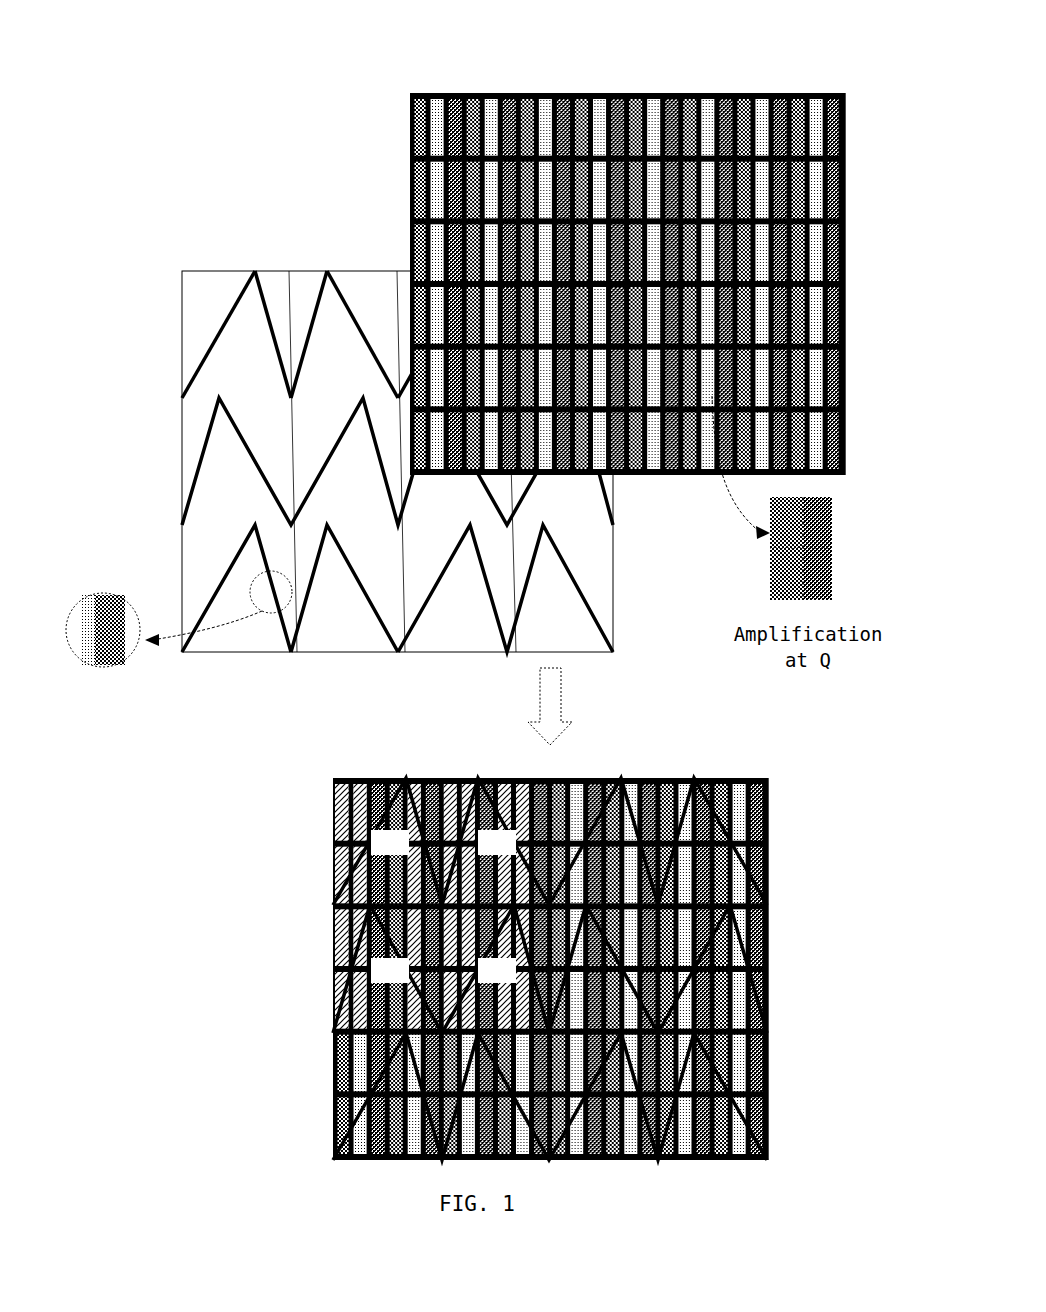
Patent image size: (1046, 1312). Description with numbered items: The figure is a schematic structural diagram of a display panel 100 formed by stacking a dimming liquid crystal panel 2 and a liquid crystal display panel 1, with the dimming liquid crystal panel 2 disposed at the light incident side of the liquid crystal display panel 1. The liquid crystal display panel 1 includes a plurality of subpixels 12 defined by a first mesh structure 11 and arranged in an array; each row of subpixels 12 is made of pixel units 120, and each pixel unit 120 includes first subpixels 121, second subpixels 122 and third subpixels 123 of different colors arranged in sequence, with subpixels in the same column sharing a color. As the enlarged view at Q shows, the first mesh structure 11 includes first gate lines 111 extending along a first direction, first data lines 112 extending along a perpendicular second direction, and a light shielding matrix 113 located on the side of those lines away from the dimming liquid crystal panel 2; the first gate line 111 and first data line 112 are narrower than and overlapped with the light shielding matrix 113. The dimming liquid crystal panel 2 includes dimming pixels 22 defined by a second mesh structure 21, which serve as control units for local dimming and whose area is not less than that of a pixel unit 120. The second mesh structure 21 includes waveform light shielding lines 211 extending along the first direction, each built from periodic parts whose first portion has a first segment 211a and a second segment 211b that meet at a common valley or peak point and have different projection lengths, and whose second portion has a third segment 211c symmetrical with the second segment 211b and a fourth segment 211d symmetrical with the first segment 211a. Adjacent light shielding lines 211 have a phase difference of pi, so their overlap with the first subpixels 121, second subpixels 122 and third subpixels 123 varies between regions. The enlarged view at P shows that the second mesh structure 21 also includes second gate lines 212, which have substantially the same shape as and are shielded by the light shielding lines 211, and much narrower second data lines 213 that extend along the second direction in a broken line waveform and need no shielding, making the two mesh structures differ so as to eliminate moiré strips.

The liquid crystal display panel 1 is at (766, 68).
The dimming liquid crystal panel 2 is at (244, 208).
The first mesh structure 11 is at (678, 278).
The subpixel 12 is at (849, 284).
The second mesh structure 21 is at (205, 354).
The dimming pixel 22 is at (197, 413).
The display panel 100 is at (760, 760).
The first gate line 111 is at (815, 540).
The first data line 112 is at (800, 585).
The light shielding matrix 113 is at (786, 550).
The pixel unit 120 is at (448, 241).
The first subpixel 121 is at (409, 256).
The second subpixel 122 is at (446, 256).
The third subpixel 123 is at (476, 256).
The light shielding line 211 is at (333, 487).
The first segment 211a is at (224, 325).
The second segment 211b is at (283, 375).
The third segment 211c is at (297, 375).
The fourth segment 211d is at (360, 325).
The second gate line 212 is at (93, 618).
The second data line 213 is at (306, 654).